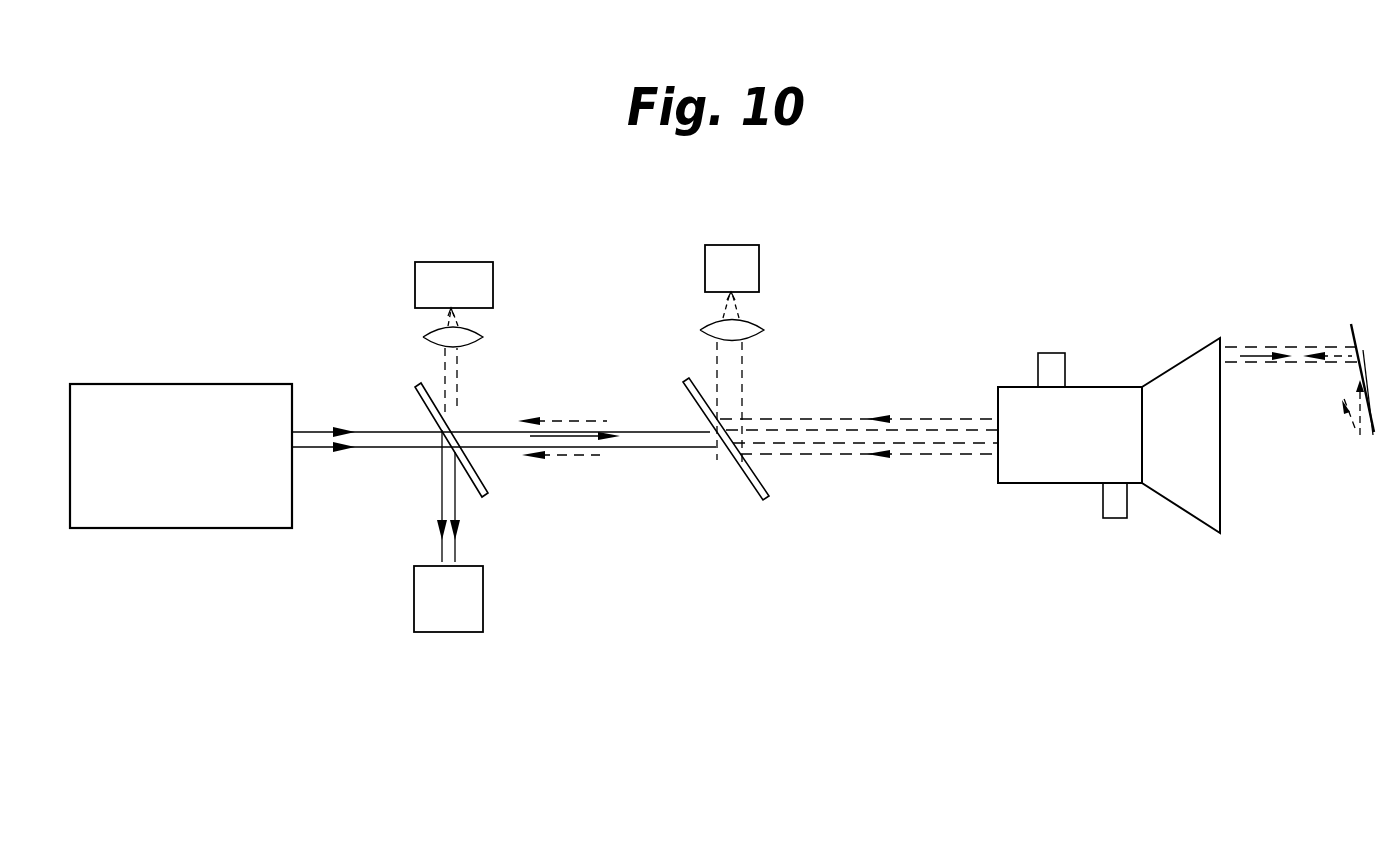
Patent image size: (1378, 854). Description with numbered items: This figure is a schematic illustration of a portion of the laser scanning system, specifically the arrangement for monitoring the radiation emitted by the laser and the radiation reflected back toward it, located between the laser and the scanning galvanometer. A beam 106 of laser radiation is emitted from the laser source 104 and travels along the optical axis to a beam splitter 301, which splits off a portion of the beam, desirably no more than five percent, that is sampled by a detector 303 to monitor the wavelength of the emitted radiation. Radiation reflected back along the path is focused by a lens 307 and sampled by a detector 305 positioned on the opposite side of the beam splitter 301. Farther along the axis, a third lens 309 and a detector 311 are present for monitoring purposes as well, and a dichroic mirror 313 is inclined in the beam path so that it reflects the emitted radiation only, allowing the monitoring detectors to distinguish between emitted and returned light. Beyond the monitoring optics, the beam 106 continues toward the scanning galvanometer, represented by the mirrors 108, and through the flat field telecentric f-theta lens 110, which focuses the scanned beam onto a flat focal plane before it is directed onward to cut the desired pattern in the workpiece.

The laser source 104 is at (203, 528).
The beam 106 is at (390, 448).
The x-y scanning galvanometer mirrors 108 is at (1077, 483).
The flat field telecentric (f-theta) lens 110 is at (1182, 508).
The beam splitter 301 is at (396, 380).
The detector 303 is at (414, 622).
The detector 305 is at (415, 270).
The lens 307 is at (480, 336).
The third lens 309 is at (700, 329).
The detector 311 is at (748, 245).
The dichroic mirror 313 is at (742, 466).